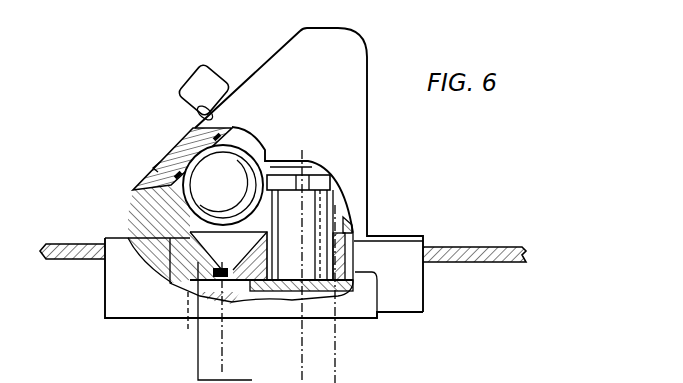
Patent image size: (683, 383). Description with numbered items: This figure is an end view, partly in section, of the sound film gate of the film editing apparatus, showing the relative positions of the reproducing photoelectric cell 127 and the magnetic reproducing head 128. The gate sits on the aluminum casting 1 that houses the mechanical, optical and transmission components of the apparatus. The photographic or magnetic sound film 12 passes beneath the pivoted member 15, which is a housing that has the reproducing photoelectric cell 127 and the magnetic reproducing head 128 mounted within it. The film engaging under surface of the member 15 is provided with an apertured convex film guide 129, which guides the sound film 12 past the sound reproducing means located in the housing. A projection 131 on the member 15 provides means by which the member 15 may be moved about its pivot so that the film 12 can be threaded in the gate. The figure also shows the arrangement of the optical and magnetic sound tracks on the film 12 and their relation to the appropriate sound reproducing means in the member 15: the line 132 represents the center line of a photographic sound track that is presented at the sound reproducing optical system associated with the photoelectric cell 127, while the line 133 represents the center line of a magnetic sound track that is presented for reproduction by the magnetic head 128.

The aluminum casting 1 is at (483, 262).
The sound film 12 is at (337, 377).
The pivoted member 15 is at (367, 149).
The reproducing photoelectric cell 127 is at (210, 170).
The magnetic reproducing head 128 is at (310, 217).
The apertured convex film guide 129 is at (210, 271).
The projection 131 is at (208, 82).
The center line of photographic sound track 132 is at (222, 333).
The center line of magnetic sound track 133 is at (302, 353).